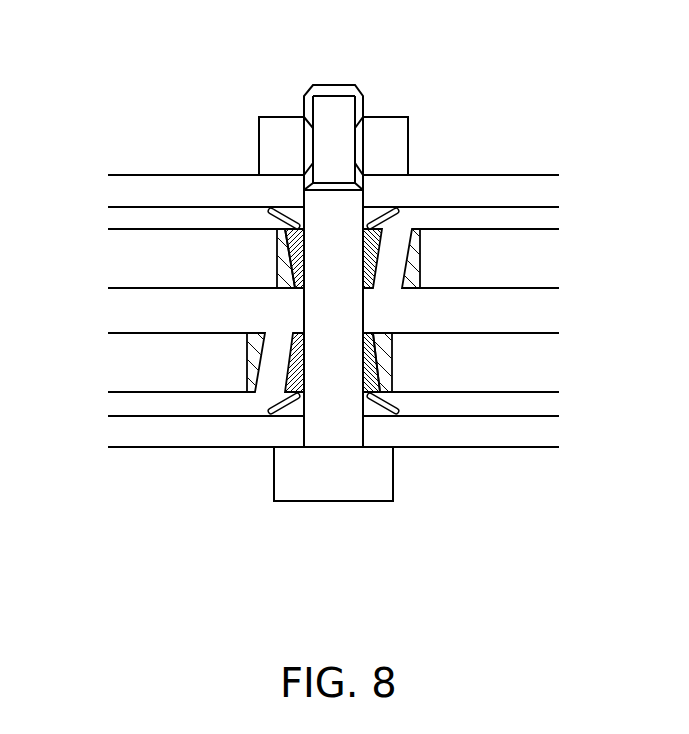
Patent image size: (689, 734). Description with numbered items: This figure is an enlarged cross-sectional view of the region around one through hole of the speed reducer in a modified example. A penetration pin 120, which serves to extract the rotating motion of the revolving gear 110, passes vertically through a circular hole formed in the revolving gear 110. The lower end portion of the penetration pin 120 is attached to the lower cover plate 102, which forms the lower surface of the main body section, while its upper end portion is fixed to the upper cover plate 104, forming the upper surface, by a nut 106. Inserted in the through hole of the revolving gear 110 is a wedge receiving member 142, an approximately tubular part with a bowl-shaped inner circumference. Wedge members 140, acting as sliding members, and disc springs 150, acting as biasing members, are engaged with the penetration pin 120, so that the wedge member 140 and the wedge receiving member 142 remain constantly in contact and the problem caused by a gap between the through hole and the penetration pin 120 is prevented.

The lower cover plate 102 is at (185, 446).
The upper cover plate 104 is at (507, 176).
The nut 106 is at (283, 117).
The revolving gear 110 is at (182, 228).
The penetration pin 120 is at (395, 473).
The wedge member 140 is at (370, 290).
The wedge receiving member 142 is at (287, 289).
The disc spring 150 is at (400, 217).